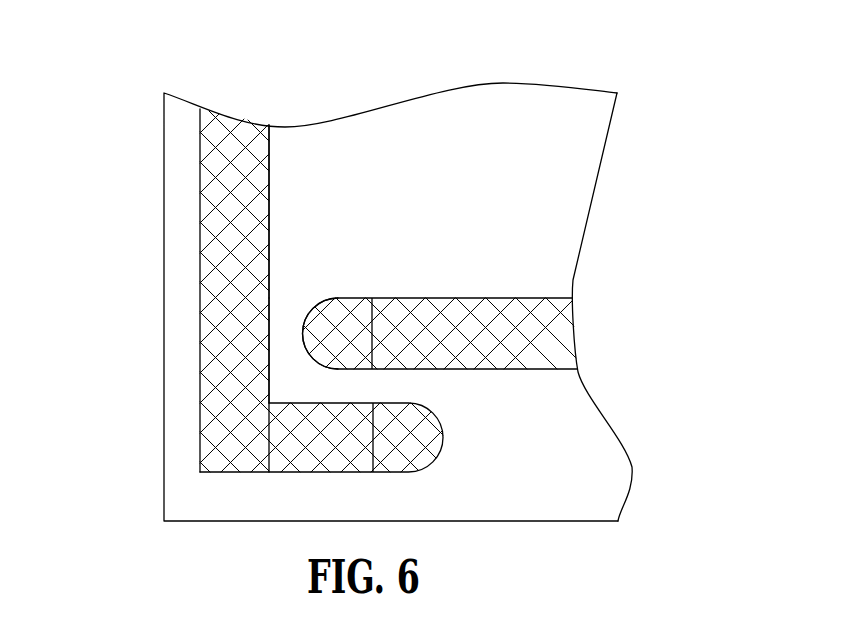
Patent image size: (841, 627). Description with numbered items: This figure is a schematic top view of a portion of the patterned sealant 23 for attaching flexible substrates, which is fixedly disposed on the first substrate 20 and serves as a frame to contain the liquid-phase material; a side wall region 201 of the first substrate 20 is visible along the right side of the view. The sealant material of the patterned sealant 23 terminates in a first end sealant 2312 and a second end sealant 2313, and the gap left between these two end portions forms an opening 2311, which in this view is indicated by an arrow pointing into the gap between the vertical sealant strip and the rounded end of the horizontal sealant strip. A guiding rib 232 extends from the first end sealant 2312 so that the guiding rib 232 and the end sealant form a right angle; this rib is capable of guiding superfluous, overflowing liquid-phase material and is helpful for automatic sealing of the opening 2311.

The first substrate 20 is at (164, 446).
The housing side wall 201 is at (553, 207).
The patterned sealant 23 is at (215, 300).
The guiding rib 232 is at (302, 455).
The opening 2311 is at (303, 272).
The first end sealant 2312 is at (262, 343).
The second end sealant 2313 is at (322, 333).